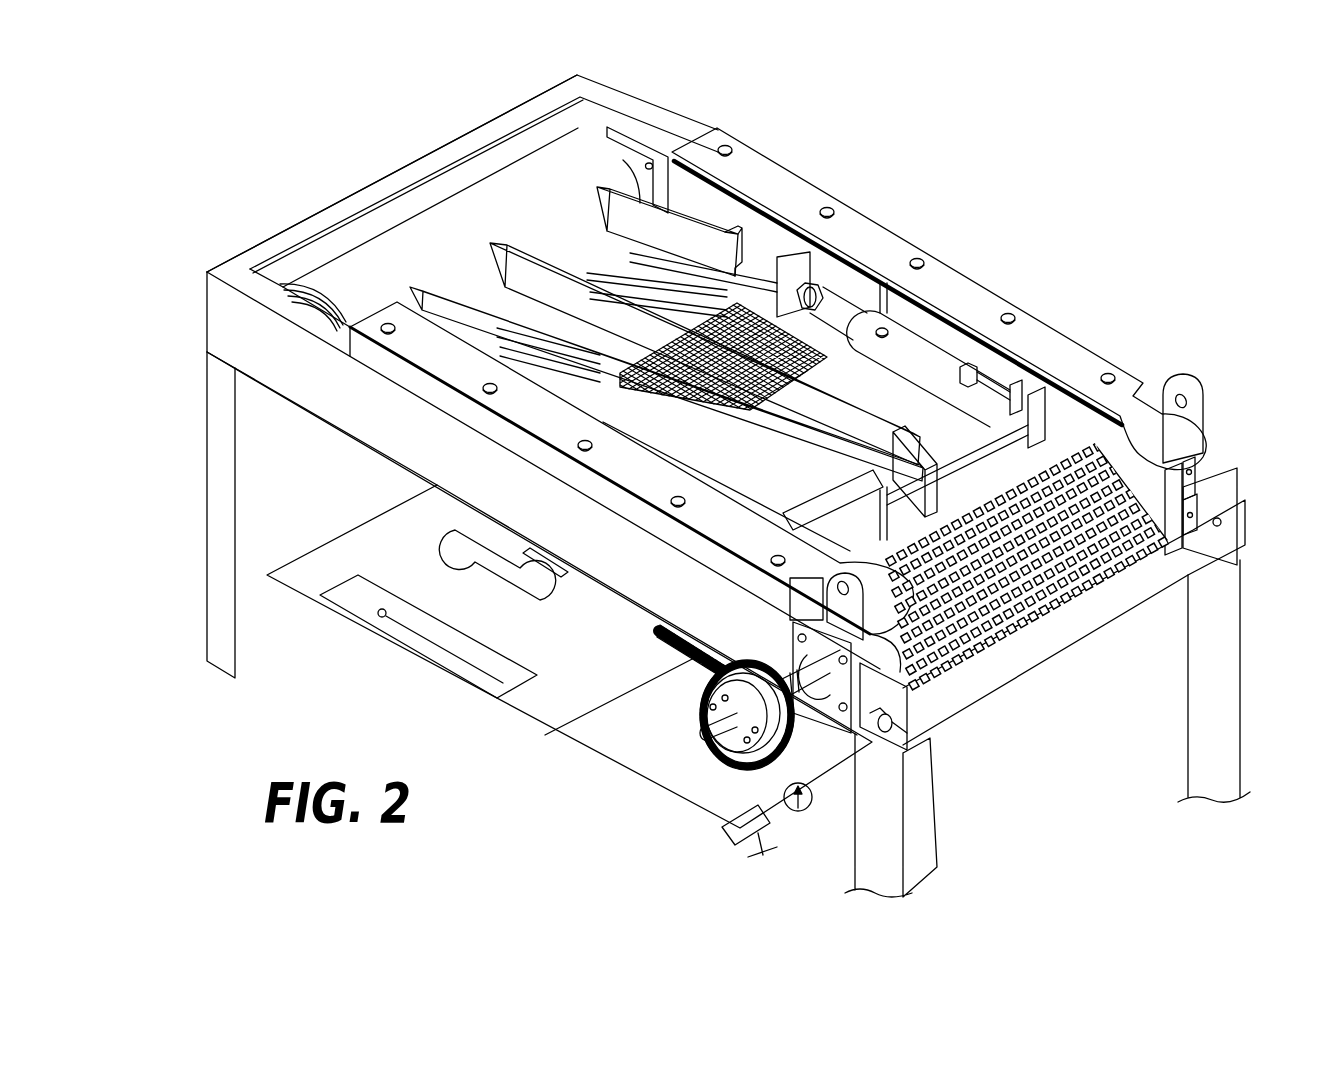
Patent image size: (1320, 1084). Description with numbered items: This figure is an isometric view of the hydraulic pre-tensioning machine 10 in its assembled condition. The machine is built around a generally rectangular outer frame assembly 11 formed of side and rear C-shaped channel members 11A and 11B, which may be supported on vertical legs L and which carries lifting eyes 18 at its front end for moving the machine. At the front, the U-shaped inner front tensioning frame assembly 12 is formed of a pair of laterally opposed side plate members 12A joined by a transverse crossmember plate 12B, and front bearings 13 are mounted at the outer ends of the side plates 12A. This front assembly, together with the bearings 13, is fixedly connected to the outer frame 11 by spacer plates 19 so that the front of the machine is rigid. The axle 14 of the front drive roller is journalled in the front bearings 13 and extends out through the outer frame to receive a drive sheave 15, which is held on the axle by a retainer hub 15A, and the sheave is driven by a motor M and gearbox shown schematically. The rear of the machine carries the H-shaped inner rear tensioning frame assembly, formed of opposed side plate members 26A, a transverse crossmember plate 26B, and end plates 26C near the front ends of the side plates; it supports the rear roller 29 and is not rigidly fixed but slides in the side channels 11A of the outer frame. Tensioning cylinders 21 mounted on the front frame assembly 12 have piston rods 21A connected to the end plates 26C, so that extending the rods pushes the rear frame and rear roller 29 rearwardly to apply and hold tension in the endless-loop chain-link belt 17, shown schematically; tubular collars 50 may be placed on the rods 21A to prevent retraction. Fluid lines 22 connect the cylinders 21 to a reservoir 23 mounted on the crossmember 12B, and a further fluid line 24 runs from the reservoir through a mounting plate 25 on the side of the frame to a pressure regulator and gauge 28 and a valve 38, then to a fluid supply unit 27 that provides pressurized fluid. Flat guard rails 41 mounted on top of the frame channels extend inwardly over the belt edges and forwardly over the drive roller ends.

The hydraulic pre-tensioning machine 10 is at (1104, 237).
The outer frame assembly 11 is at (408, 437).
The side C-shaped channel member 11A is at (620, 96).
The rear C-shaped channel member 11B is at (413, 163).
The inner front tensioning frame assembly 12 is at (1034, 567).
The side plate member 12A is at (632, 487).
The transverse crossmember plate 12B is at (1027, 383).
The front bearing 13 is at (1220, 480).
The axle 14 is at (812, 683).
The drive sheave 15 is at (712, 683).
The retainer hub 15A is at (740, 747).
The endless-loop chain-link belt 17 is at (805, 378).
The lifting eye 18 is at (1203, 400).
The spacer plate 19 is at (795, 650).
The tensioning cylinder 21 is at (942, 358).
The piston rod 21A is at (793, 284).
The fluid line 22 is at (1040, 433).
The reservoir 23 is at (920, 450).
The fluid line 24 is at (877, 733).
The mounting plate 25 is at (930, 725).
The side plate member 26A is at (808, 268).
The transverse crossmember plate 26B is at (804, 247).
The end plate 26C is at (840, 307).
The fluid supply unit 27 is at (643, 147).
The pressure regulator and gauge 28 is at (803, 817).
The rear roller 29 is at (345, 262).
The valve 38 is at (740, 830).
The guard rail 41 is at (1058, 342).
The tubular collar 50 is at (862, 300).
The vertical leg L is at (207, 488).
The motor M is at (503, 565).